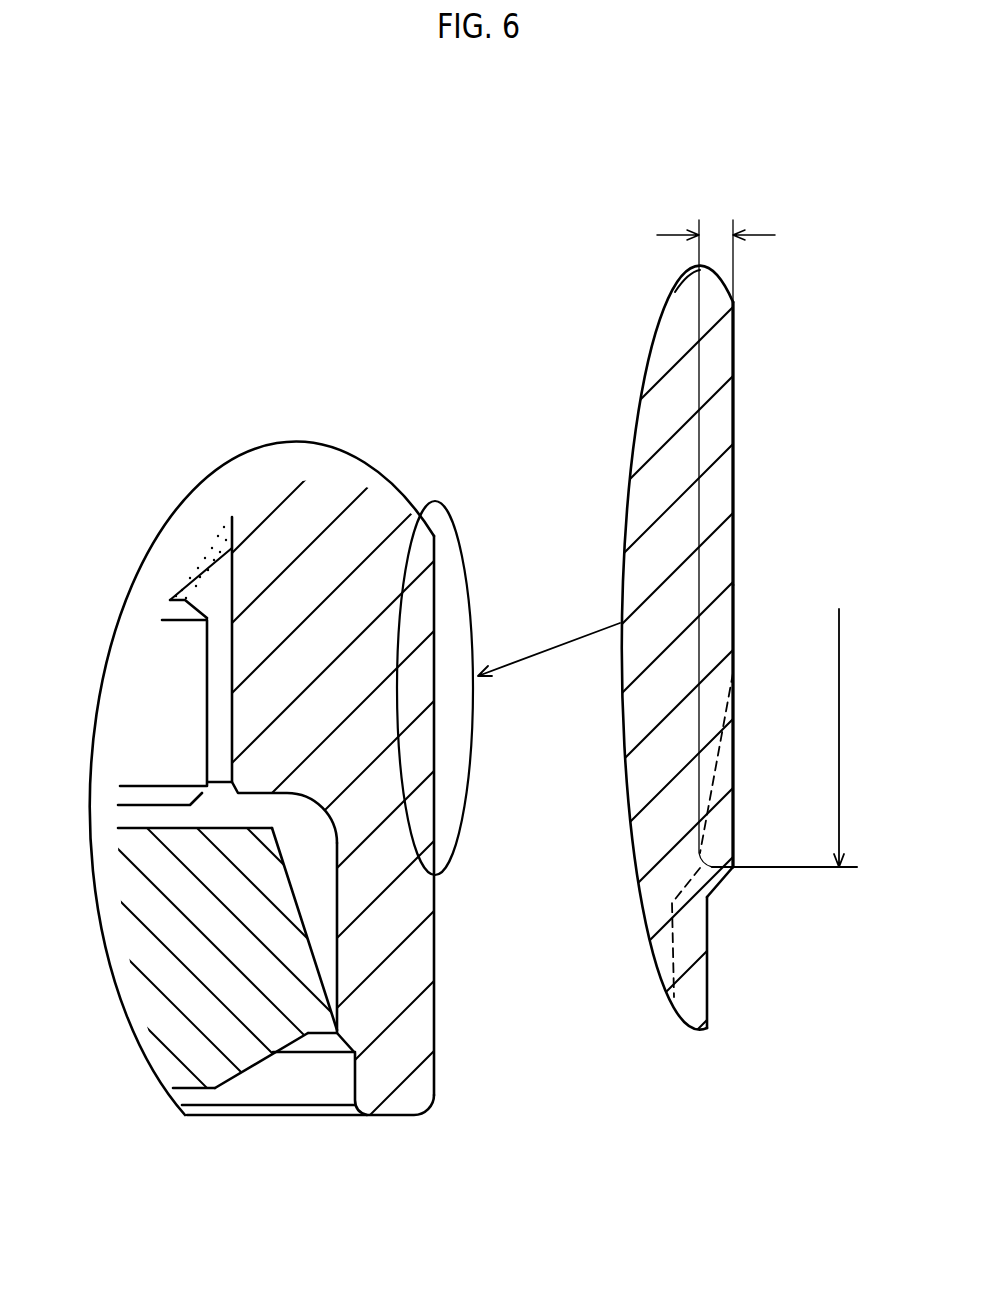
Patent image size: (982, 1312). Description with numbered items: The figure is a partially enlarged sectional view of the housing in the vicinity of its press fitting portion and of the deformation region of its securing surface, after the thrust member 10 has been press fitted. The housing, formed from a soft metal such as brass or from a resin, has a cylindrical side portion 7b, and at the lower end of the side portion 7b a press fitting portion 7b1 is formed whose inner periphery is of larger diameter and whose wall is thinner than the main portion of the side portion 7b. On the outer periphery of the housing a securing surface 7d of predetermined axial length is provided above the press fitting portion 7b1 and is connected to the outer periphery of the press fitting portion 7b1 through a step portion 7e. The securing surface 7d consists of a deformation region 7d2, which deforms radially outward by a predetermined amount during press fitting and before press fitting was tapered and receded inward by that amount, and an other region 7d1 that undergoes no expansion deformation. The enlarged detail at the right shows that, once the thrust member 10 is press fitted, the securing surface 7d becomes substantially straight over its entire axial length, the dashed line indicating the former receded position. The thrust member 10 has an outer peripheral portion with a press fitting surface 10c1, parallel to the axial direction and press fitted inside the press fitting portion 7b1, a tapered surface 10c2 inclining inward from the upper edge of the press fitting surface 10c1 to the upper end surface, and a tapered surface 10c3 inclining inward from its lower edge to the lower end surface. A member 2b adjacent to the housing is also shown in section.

The side portion 7b is at (318, 497).
The press fitting portion 7b1 is at (403, 970).
The securing surface 7d is at (437, 597).
The other region 7d1 is at (735, 413).
The deformation region 7d2 is at (735, 758).
The step portion 7e is at (722, 887).
The plate 2b is at (155, 700).
The thrust member 10 is at (163, 968).
The press fitting surface 10c1 is at (340, 992).
The tapered surface 10c2 is at (307, 903).
The tapered surface 10c3 is at (257, 1063).